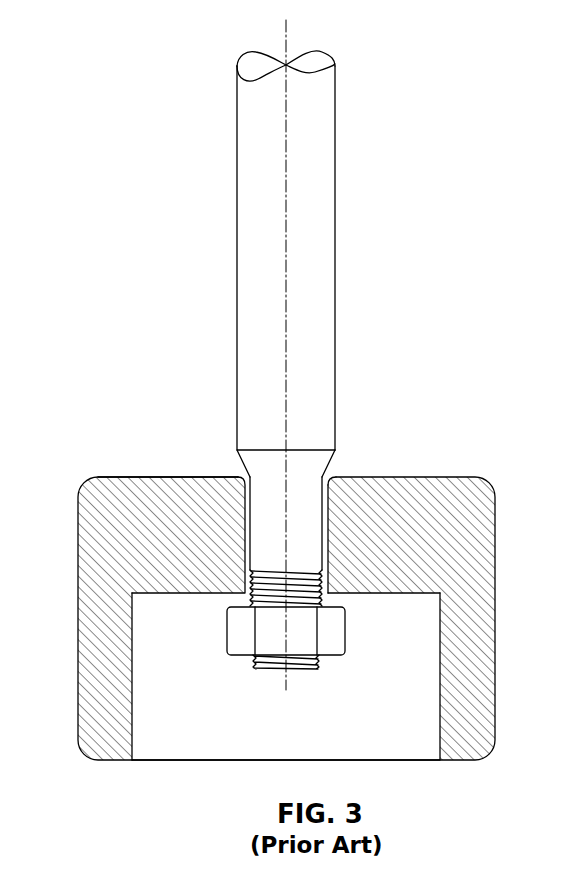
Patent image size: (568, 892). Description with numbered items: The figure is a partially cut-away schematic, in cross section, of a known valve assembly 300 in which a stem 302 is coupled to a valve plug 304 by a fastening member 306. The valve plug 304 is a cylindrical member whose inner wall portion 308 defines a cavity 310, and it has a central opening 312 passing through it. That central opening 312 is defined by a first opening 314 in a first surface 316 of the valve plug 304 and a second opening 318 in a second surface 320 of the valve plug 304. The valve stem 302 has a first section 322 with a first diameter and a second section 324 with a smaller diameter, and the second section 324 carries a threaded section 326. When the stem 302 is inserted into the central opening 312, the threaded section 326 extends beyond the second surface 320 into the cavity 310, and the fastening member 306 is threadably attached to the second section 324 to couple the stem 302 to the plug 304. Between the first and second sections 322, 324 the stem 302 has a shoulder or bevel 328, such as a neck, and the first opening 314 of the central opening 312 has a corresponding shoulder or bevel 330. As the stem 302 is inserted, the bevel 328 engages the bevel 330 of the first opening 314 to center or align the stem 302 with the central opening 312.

The valve assembly 300 is at (168, 52).
The valve stem 302 is at (247, 263).
The valve plug 304 is at (78, 522).
The fastening member 306 is at (330, 648).
The inner wall portion 308 is at (132, 710).
The cavity 310 is at (317, 738).
The central opening 312 is at (328, 551).
The first opening 314 is at (336, 478).
The first surface 316 is at (135, 477).
The second opening 318 is at (243, 594).
The second surface 320 is at (388, 596).
The first section 322 is at (327, 355).
The second section 324 is at (300, 521).
The threaded section 326 is at (270, 665).
The shoulder or bevel 328 is at (247, 471).
The shoulder or bevel 330 is at (333, 477).